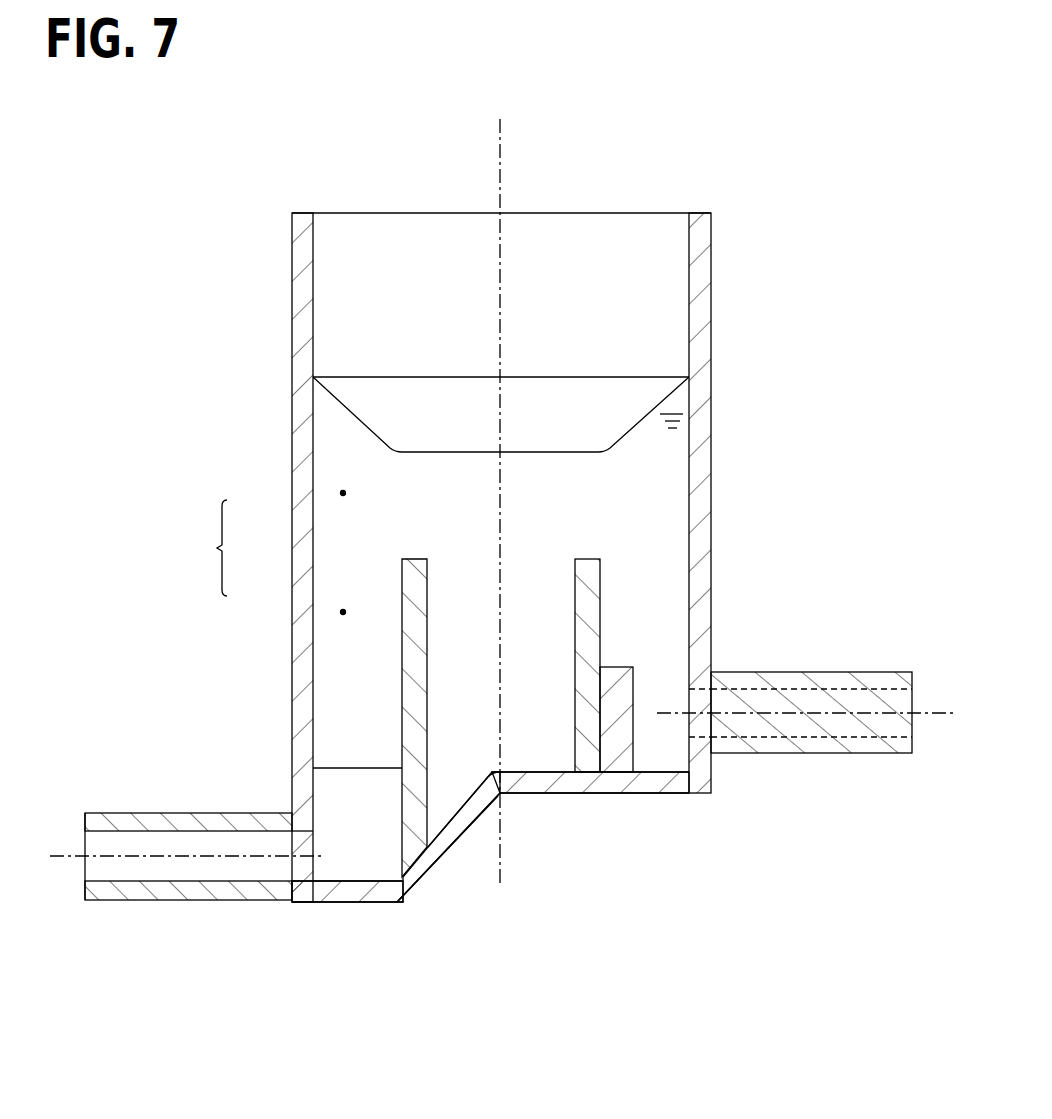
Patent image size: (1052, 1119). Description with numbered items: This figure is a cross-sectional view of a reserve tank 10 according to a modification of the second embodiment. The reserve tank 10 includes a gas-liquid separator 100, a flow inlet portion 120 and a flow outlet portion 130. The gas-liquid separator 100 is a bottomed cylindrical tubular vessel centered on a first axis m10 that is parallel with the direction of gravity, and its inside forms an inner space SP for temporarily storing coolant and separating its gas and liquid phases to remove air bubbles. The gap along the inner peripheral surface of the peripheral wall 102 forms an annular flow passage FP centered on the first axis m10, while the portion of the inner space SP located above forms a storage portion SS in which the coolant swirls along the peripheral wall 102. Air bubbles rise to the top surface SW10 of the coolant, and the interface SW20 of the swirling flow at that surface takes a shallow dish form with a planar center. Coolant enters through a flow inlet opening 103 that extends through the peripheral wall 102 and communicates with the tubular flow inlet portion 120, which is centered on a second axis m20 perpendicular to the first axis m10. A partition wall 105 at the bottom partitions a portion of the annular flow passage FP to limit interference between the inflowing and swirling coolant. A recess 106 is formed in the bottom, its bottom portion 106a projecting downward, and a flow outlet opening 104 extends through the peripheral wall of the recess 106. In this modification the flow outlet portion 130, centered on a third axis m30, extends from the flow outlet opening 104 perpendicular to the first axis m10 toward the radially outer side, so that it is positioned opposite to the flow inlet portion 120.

The reserve tank 10 is at (778, 169).
The gas-liquid separator 100 is at (714, 275).
The peripheral wall 102 is at (712, 533).
The flow inlet opening 103 is at (710, 698).
The flow outlet opening 104 is at (302, 878).
The partition wall 105 is at (623, 665).
The recess 106 is at (366, 882).
The bottom portion 106a is at (330, 903).
The flow inlet portion 120 is at (862, 669).
The flow outlet portion 130 is at (121, 809).
The first axis m10 is at (502, 121).
The second axis m20 is at (927, 712).
The third axis m30 is at (52, 855).
The top surface SW10 is at (357, 373).
The interface SW20 is at (349, 410).
The inner space SP is at (204, 548).
The storage portion SS is at (343, 493).
The flow passage FP is at (343, 612).